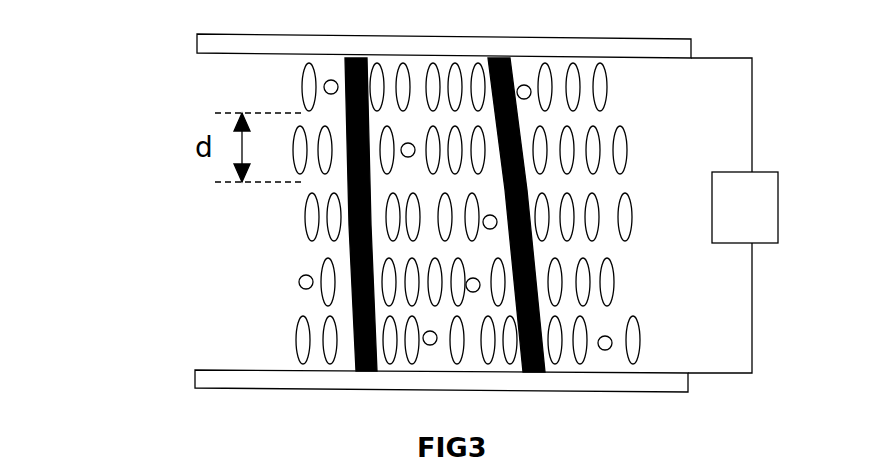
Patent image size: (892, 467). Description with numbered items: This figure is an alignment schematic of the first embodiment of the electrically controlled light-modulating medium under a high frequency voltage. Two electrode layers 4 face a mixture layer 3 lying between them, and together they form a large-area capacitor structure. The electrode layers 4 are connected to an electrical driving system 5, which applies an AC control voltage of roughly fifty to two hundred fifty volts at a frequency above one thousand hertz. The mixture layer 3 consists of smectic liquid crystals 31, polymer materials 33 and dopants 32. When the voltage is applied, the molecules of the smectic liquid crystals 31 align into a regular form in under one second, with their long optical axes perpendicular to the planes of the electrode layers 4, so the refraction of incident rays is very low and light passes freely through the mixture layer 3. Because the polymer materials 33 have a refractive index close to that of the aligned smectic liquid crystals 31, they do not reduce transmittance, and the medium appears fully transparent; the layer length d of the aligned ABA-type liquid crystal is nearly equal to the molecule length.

The mixture layer 3 is at (110, 194).
The electrode layers 4 is at (197, 50).
The electrical driving system 5 is at (778, 208).
The smectic liquid crystals 31 is at (297, 328).
The dopants 32 is at (299, 282).
The polymer materials 33 is at (352, 248).